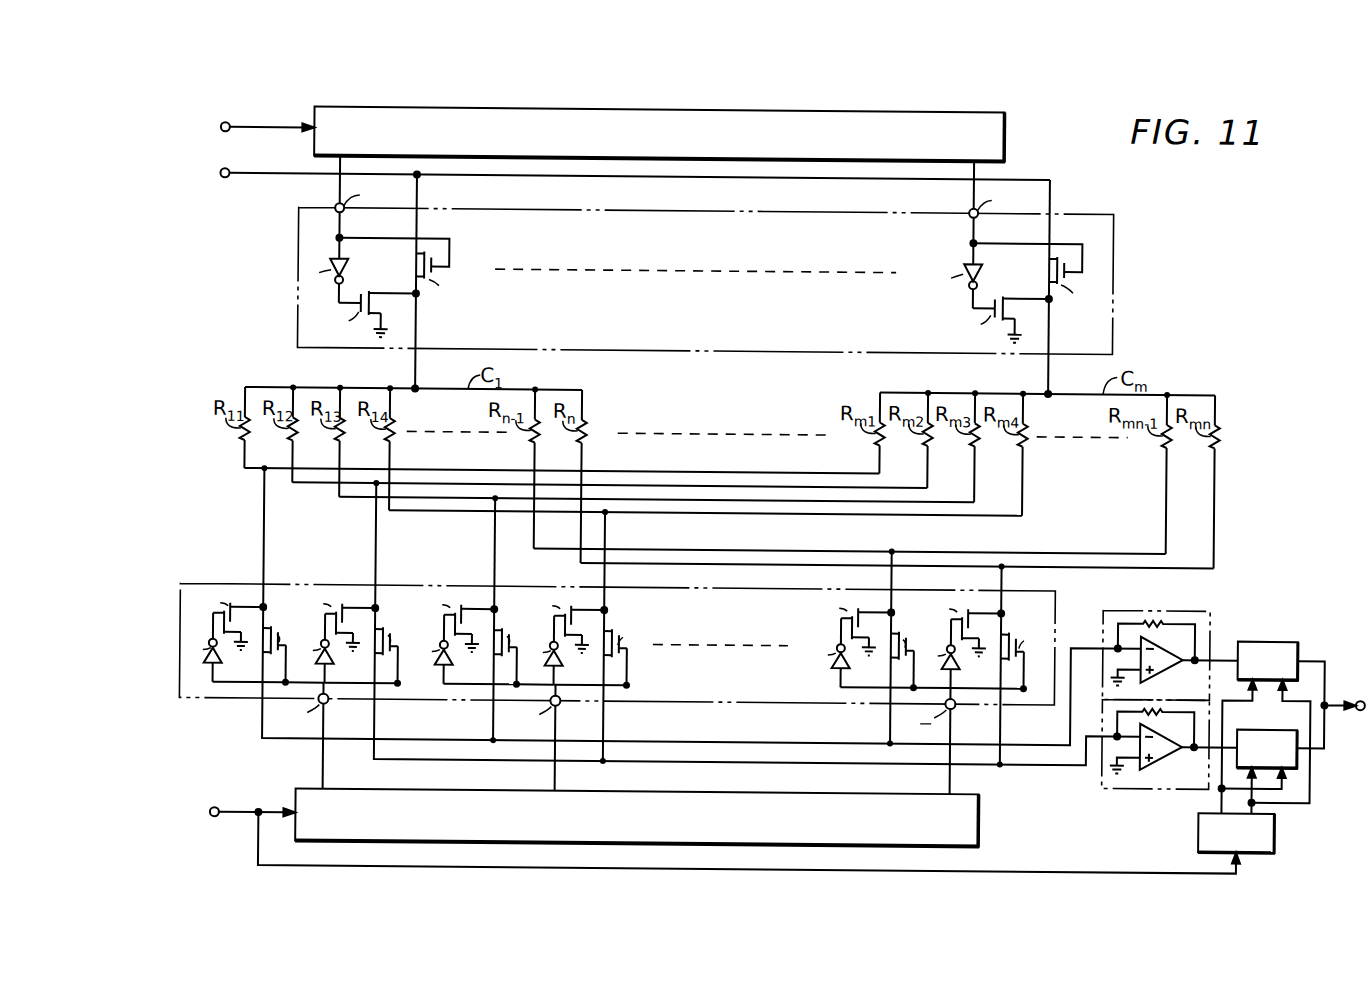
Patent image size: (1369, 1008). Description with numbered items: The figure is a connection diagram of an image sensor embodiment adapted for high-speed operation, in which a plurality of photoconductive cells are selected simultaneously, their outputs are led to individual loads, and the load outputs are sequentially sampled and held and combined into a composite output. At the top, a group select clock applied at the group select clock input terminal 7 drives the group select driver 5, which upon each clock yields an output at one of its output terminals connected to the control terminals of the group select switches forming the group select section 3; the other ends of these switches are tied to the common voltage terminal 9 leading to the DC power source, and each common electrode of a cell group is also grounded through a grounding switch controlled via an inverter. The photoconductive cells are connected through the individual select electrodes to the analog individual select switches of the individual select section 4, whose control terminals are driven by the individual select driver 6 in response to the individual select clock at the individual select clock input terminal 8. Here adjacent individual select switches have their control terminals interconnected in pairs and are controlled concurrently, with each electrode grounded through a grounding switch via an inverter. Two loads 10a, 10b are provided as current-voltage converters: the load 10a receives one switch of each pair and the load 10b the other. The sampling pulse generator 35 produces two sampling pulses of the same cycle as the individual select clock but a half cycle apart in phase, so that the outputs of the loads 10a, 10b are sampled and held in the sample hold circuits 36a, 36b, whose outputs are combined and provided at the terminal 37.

The group select section 3 is at (1112, 232).
The individual select section 4 is at (190, 583).
The group select driver 5 is at (1002, 112).
The individual select driver 6 is at (982, 797).
The group select clock input terminal 7 is at (218, 126).
The individual select clock input terminal 8 is at (213, 811).
The common voltage terminal 9 is at (218, 172).
The load 10a is at (1178, 603).
The load 10b is at (1138, 782).
The sampling pulse generator 35 is at (1278, 822).
The sample hold circuit 36a is at (1265, 633).
The sample hold circuit 36b is at (1262, 721).
The terminal 37 is at (1361, 691).